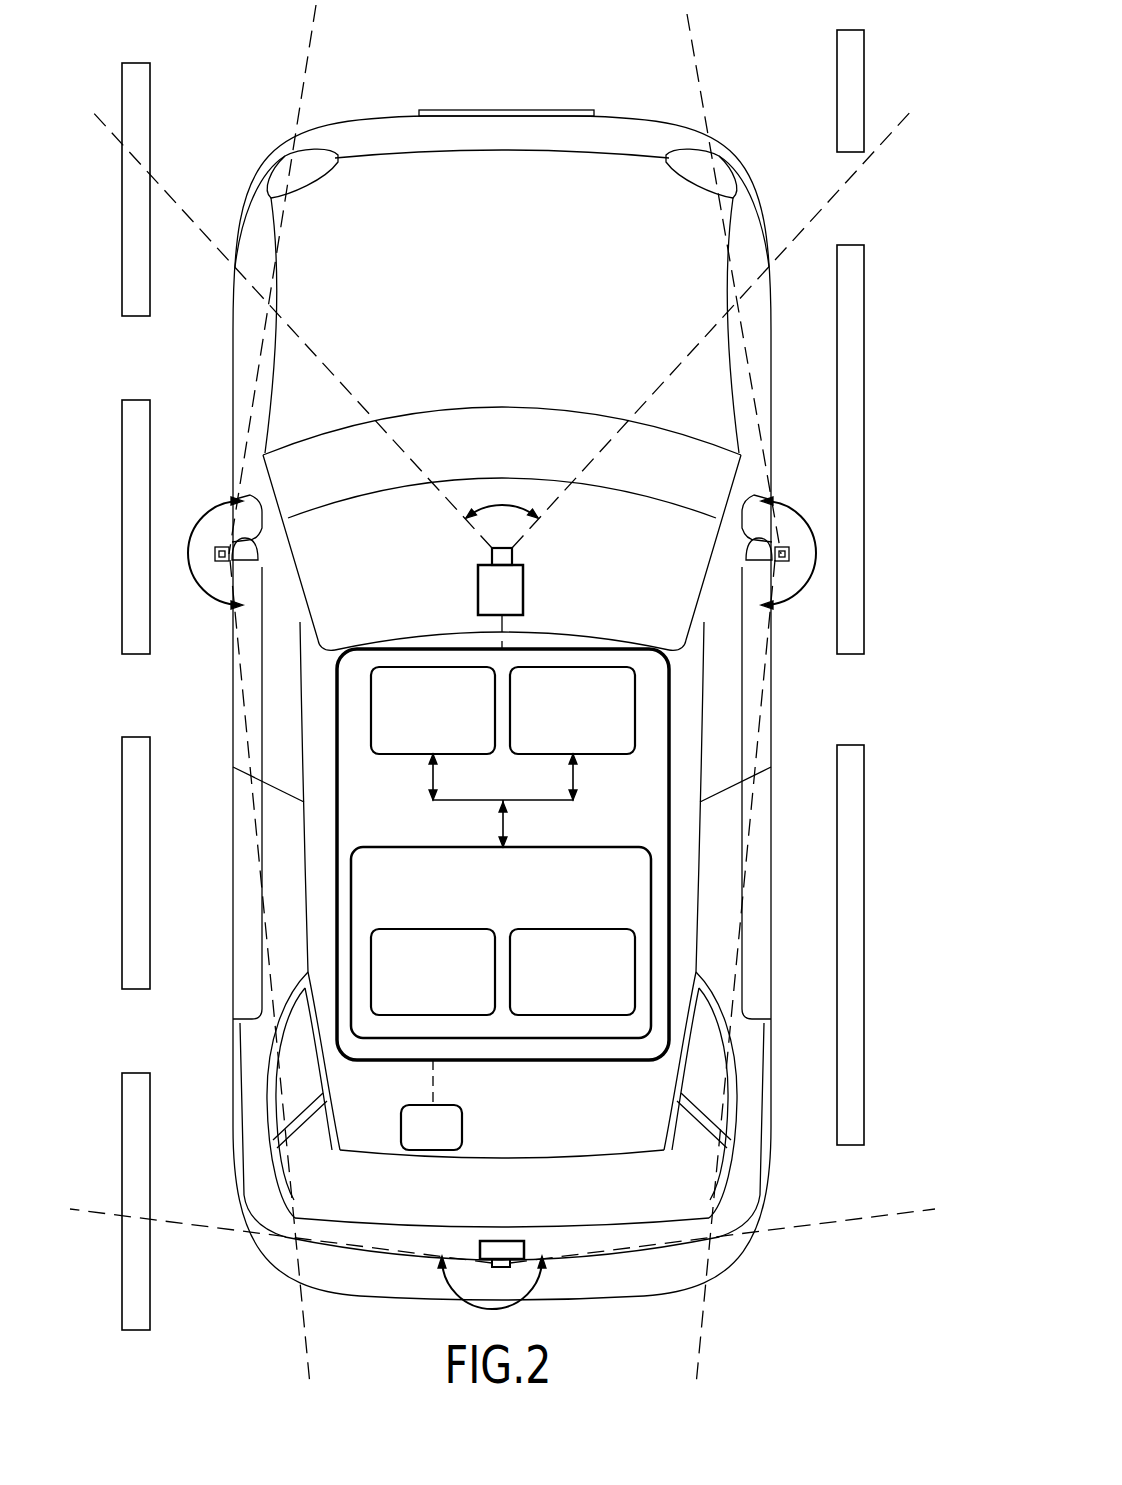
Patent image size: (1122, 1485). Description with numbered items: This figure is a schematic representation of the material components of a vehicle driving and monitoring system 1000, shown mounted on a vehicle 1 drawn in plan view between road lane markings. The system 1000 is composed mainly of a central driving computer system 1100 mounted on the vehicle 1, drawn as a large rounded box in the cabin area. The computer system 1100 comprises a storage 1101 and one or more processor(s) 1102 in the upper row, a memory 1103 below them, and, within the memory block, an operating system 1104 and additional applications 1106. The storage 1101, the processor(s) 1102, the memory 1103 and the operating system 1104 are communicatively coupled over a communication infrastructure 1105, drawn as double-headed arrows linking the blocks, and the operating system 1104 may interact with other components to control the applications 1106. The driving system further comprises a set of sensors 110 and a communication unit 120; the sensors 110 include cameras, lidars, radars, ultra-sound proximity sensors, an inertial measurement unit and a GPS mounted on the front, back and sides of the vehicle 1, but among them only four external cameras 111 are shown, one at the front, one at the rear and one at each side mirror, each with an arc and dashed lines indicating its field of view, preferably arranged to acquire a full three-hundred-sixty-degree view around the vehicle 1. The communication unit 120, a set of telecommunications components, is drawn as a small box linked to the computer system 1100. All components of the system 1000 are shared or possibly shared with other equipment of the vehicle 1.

The vehicle 1 is at (726, 106).
The sensors 110 is at (217, 1026).
The external cameras 111 is at (523, 590).
The communication unit 120 is at (414, 1131).
The vehicle driving and monitoring system 1000 is at (444, 732).
The central driving computer system 1100 is at (503, 929).
The storage 1101 is at (408, 742).
The processor(s) 1102 is at (547, 742).
The memory 1103 is at (476, 905).
The operating system 1104 is at (408, 1006).
The communication infrastructure 1105 is at (551, 802).
The applications 1106 is at (547, 1002).